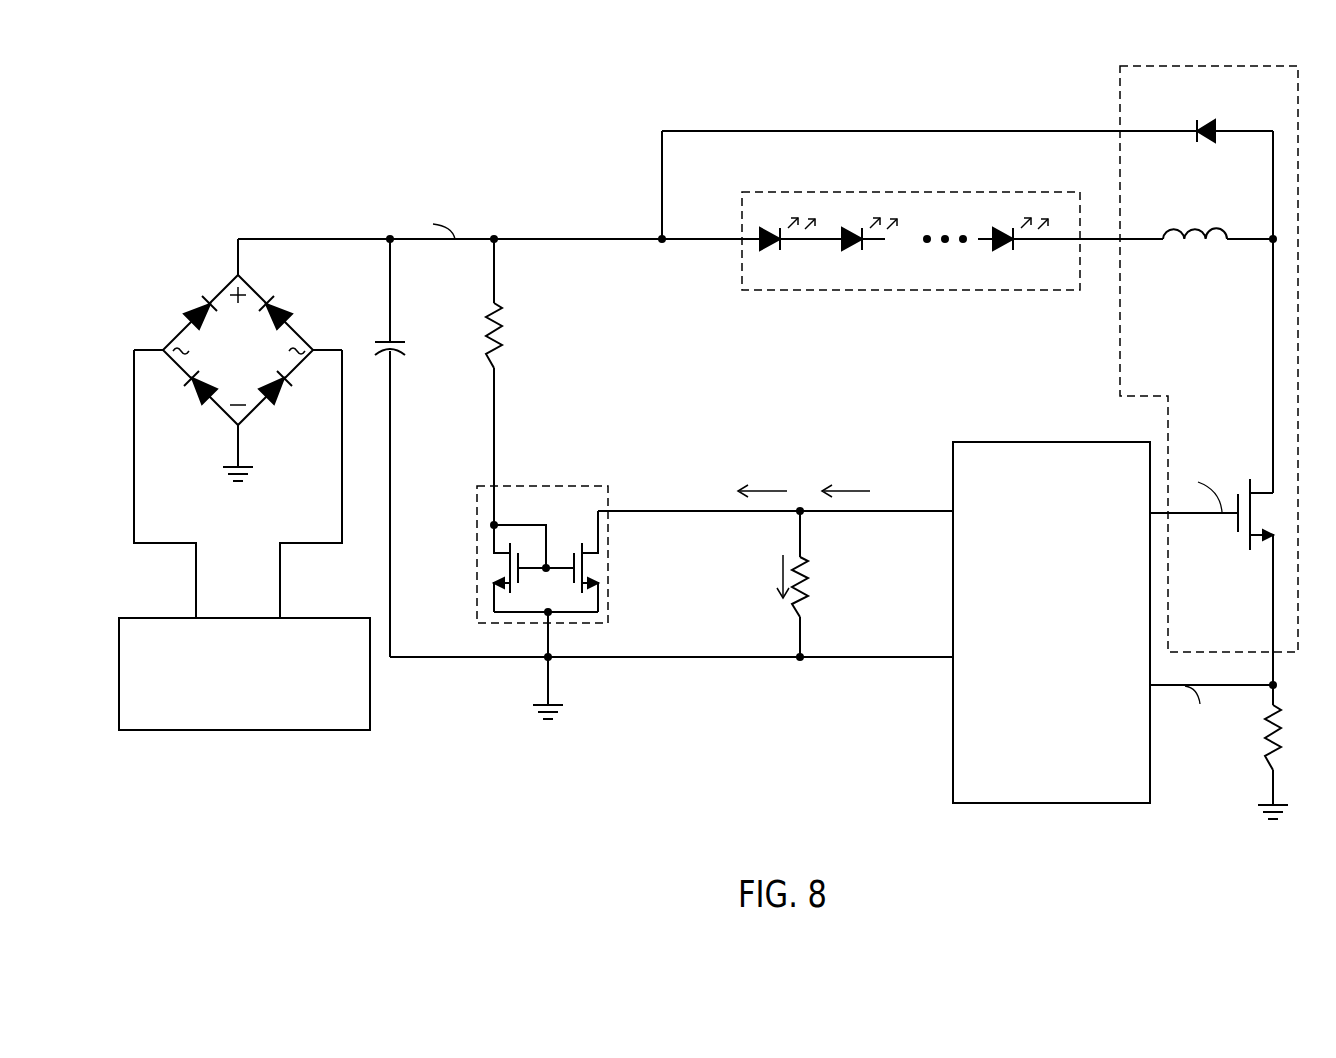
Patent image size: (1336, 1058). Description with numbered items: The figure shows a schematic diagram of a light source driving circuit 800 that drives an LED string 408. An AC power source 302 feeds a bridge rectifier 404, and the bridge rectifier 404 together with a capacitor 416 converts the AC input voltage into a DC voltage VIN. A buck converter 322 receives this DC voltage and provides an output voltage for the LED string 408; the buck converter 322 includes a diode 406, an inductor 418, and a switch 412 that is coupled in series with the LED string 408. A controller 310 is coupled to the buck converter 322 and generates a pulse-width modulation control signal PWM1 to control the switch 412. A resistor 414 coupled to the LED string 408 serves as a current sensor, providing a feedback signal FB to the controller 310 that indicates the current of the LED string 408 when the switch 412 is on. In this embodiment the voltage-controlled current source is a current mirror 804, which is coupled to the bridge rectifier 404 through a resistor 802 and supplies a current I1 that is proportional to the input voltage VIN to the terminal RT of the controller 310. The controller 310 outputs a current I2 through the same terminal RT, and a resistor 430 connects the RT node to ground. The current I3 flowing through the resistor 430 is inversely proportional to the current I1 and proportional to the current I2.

The light source driving circuit 800 is at (258, 154).
The AC power source 302 is at (317, 618).
The bridge rectifier 404 is at (293, 325).
The capacitor 416 is at (396, 340).
The resistor 802 is at (498, 355).
The current mirror 804 is at (608, 585).
The resistor 430 is at (805, 578).
The controller 310 is at (1032, 442).
The LED string 408 is at (944, 192).
The buck converter 322 is at (1120, 98).
The diode 406 is at (1197, 122).
The inductor 418 is at (1223, 233).
The switch 412 is at (1237, 532).
The resistor 414 is at (1268, 760).